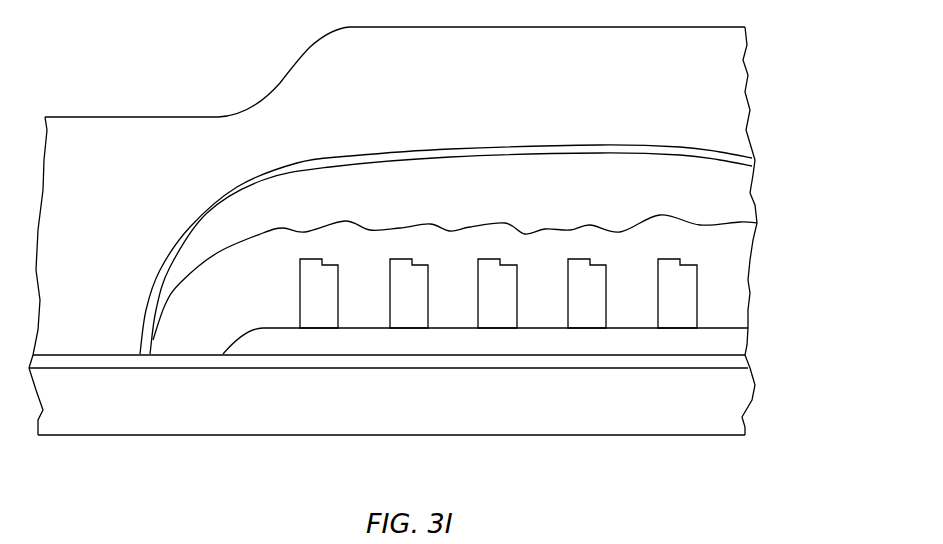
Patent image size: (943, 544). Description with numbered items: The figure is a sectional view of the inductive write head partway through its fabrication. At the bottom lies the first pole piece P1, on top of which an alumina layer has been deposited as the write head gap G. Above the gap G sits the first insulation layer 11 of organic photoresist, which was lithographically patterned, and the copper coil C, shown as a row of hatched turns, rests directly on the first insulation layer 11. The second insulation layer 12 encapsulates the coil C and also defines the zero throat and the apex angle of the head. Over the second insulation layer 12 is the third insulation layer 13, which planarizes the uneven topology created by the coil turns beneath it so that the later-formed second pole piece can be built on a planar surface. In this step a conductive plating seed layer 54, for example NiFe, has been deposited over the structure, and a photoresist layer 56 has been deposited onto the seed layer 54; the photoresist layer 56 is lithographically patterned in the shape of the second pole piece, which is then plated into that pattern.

The first pole piece P1 is at (732, 407).
The write head gap G is at (748, 358).
The first insulation layer 11 is at (750, 350).
The copper coil C is at (673, 328).
The second insulation layer 12 is at (738, 293).
The third insulation layer 13 is at (737, 193).
The conductive plating seed layer 54 is at (755, 160).
The photoresist layer 56 is at (722, 92).